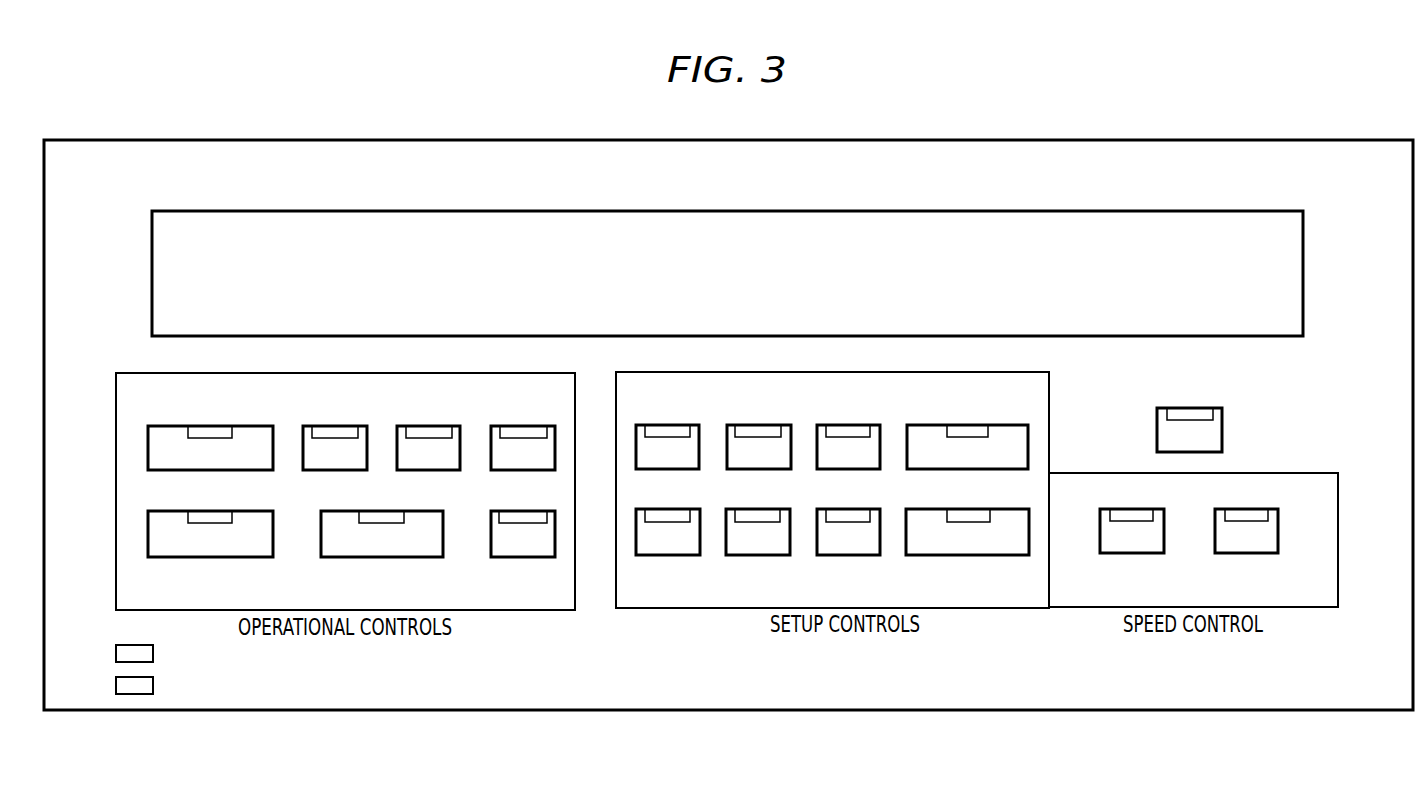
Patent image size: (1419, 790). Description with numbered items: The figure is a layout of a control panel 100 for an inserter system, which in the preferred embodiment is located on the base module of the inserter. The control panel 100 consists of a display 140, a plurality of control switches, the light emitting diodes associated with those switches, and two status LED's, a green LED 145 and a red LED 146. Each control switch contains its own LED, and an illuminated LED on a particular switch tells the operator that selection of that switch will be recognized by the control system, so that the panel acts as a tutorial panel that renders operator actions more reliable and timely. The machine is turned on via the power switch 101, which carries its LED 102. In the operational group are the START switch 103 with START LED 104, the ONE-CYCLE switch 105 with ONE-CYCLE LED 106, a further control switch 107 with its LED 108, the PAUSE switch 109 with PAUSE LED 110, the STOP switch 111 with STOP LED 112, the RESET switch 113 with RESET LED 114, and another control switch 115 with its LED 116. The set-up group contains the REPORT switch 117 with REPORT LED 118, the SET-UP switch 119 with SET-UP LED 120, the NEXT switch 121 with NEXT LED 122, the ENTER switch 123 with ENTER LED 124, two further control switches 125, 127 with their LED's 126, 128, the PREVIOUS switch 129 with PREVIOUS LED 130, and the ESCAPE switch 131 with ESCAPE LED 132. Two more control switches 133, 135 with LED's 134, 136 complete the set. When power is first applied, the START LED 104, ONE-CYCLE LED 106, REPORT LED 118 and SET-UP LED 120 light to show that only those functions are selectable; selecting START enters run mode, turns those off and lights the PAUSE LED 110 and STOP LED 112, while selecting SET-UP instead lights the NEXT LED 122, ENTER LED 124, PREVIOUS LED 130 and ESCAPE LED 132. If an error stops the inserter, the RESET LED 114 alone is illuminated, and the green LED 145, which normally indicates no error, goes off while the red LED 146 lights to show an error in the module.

The control panel 100 is at (1013, 120).
The display 140 is at (1253, 210).
The power switch 101 is at (1222, 437).
The power switch LED 102 is at (1222, 418).
The START switch 103 is at (148, 450).
The START LED 104 is at (185, 430).
The ONE-CYCLE switch 105 is at (303, 450).
The ONE-CYCLE LED 106 is at (303, 430).
The control switch 107 is at (462, 440).
The LED 108 is at (397, 430).
The PAUSE switch 109 is at (556, 455).
The PAUSE LED 110 is at (577, 385).
The STOP switch 111 is at (148, 545).
The STOP LED 112 is at (188, 518).
The RESET switch 113 is at (321, 539).
The RESET LED 114 is at (322, 520).
The control switch 115 is at (491, 543).
The LED 116 is at (491, 517).
The REPORT switch 117 is at (701, 427).
The REPORT LED 118 is at (653, 435).
The SET-UP switch 119 is at (793, 428).
The SET-UP LED 120 is at (780, 428).
The NEXT switch 121 is at (880, 440).
The NEXT LED 122 is at (860, 430).
The ENTER switch 123 is at (1012, 424).
The ENTER LED 124 is at (990, 427).
The control switch 125 is at (682, 555).
The LED 126 is at (667, 522).
The control switch 127 is at (777, 555).
The LED 128 is at (753, 522).
The PREVIOUS switch 129 is at (880, 543).
The PREVIOUS LED 130 is at (850, 522).
The ESCAPE switch 131 is at (972, 555).
The ESCAPE LED 132 is at (963, 522).
The control switch 133 is at (1143, 553).
The LED 134 is at (1128, 521).
The control switch 135 is at (1273, 553).
The LED 136 is at (1250, 521).
The green LED 145 is at (116, 652).
The red LED 146 is at (116, 688).